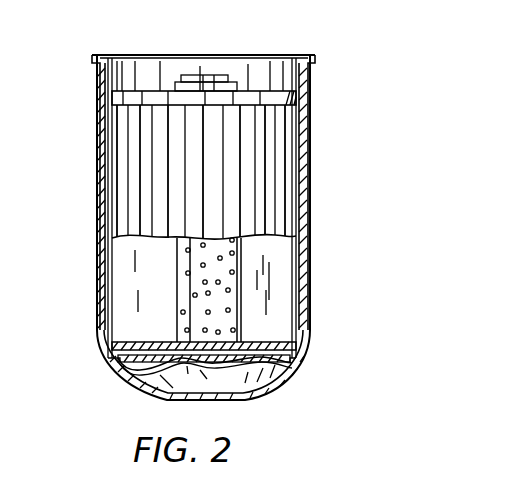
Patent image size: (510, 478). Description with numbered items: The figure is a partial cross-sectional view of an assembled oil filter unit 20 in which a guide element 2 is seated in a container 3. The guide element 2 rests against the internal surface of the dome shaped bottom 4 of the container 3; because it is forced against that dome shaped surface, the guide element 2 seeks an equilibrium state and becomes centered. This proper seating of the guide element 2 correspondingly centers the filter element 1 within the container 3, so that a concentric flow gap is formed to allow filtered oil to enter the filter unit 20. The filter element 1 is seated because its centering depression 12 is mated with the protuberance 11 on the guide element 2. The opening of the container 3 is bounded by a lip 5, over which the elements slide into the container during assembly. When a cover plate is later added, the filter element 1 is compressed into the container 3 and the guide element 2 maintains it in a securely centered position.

The oil filter unit 20 is at (331, 230).
The filter element 1 is at (283, 107).
The lip 5 is at (297, 108).
The container 3 is at (310, 310).
The guide element 2 is at (272, 385).
The dome shaped bottom 4 is at (247, 400).
The protuberance 11 is at (205, 375).
The centering depression 12 is at (177, 345).